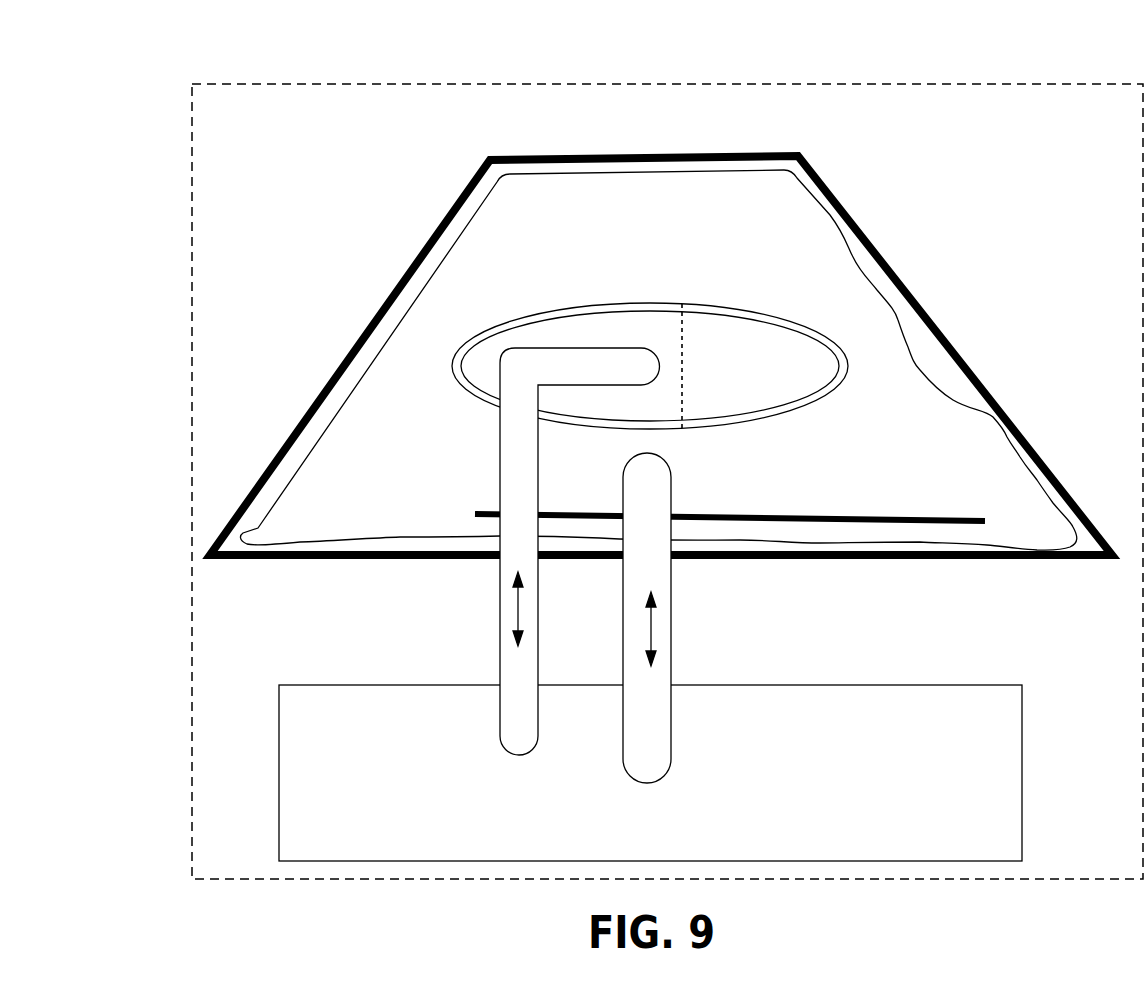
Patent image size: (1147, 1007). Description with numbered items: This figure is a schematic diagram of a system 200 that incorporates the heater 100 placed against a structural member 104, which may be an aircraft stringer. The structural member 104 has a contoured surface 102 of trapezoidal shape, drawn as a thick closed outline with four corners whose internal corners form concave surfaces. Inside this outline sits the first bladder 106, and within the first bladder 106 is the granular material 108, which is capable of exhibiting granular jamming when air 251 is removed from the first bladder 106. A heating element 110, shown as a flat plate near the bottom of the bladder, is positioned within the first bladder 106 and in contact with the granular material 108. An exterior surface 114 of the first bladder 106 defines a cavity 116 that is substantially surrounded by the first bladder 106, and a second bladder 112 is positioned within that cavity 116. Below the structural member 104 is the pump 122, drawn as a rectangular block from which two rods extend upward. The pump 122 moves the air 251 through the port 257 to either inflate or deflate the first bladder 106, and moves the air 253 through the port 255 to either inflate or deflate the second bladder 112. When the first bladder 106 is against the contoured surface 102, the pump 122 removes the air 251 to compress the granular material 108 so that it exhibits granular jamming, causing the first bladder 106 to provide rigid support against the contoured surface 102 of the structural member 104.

The heater 100 is at (839, 265).
The contoured surface 102 is at (248, 538).
The structural member 104 is at (486, 157).
The first bladder 106 is at (382, 537).
The granular material 108 is at (914, 444).
The heating element 110 is at (758, 516).
The second bladder 112 is at (722, 311).
The exterior surface 114 is at (588, 304).
The cavity 116 is at (684, 368).
The pump 122 is at (979, 838).
The system 200 is at (1040, 83).
The air 251 is at (655, 630).
The air 253 is at (520, 612).
The port 255 is at (657, 348).
The port 257 is at (668, 468).